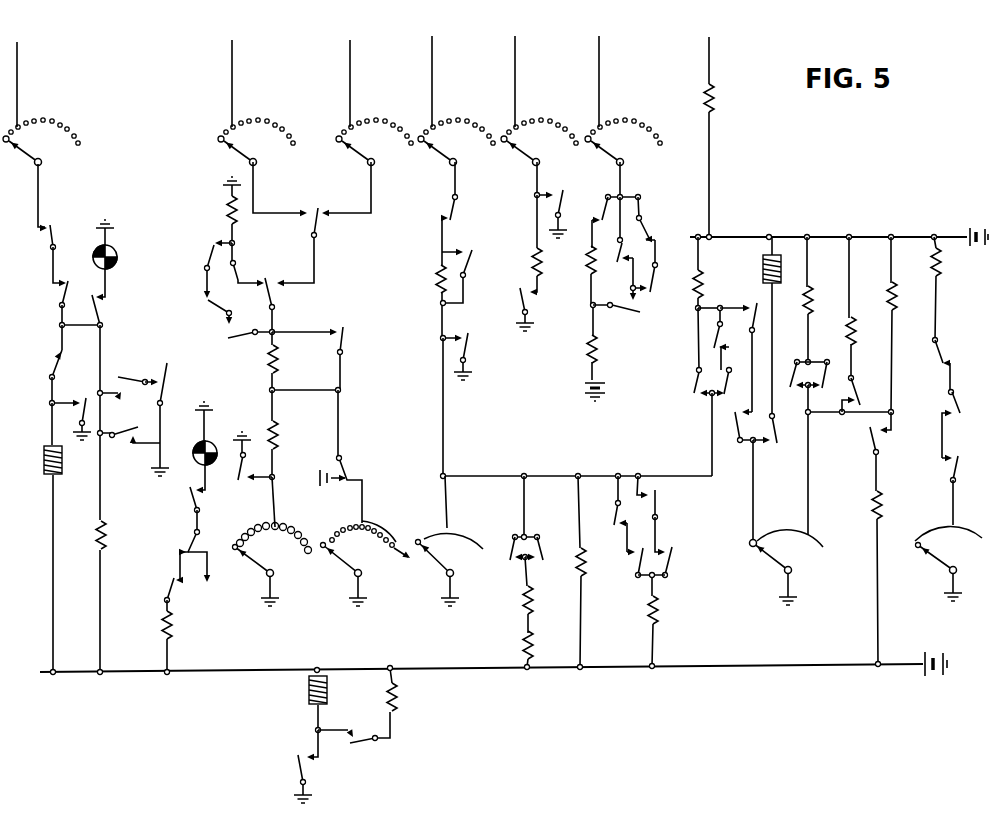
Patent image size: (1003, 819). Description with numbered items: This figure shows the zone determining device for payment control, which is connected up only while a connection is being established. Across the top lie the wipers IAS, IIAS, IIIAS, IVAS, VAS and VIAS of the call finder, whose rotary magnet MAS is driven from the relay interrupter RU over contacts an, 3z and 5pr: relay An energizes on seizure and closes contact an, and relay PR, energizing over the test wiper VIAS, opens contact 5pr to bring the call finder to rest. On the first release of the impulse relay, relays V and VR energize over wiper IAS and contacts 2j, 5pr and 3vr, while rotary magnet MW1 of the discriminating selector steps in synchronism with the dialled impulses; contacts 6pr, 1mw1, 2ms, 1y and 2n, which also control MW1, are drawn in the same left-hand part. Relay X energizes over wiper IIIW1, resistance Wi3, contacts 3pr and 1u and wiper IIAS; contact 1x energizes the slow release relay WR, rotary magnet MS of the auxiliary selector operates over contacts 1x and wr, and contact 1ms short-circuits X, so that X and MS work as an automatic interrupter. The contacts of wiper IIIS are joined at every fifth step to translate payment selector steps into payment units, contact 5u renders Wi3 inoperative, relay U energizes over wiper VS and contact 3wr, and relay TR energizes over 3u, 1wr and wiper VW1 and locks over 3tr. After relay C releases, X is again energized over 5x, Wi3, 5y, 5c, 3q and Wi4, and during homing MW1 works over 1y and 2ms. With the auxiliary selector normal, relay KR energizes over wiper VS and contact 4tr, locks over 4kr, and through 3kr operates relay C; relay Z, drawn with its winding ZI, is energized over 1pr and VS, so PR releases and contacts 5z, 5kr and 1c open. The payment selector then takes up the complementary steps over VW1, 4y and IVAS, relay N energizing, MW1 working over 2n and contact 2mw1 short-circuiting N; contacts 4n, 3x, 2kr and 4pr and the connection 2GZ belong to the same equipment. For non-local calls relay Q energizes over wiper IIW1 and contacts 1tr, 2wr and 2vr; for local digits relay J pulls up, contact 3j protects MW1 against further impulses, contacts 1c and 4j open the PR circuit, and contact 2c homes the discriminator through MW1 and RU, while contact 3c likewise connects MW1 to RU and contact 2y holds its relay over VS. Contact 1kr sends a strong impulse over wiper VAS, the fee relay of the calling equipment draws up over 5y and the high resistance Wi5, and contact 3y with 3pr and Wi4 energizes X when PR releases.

The selector switch I IAS is at (41, 104).
The selector switch II IIAS is at (256, 103).
The selector switch III IIIAS is at (374, 103).
The selector switch IV IVAS is at (456, 101).
The selector switch V VAS is at (539, 101).
The selector switch VI VIAS is at (623, 101).
The relay contact 2j is at (47, 207).
The relay contact 6pr is at (47, 277).
The relay contact 3vr is at (43, 352).
The relay contact 1mw1 is at (72, 408).
The relay VR is at (38, 539).
The signal lamp RU is at (160, 342).
The relay contact 3c is at (419, 332).
The relay MW1 is at (124, 533).
The relay contact 2ms is at (123, 380).
The relay contact 1y is at (159, 401).
The relay contact 2n is at (134, 443).
The relay contact an is at (204, 489).
The relay contact 3z is at (185, 532).
The connection 2GZ is at (205, 576).
The relay contact 5pr is at (161, 577).
The relay MAS is at (187, 637).
The relay contact 1u is at (312, 224).
The resistor Wi4 is at (219, 211).
The relay contact 3q is at (464, 305).
The relay contact 5c is at (206, 307).
The relay contact 5y is at (373, 308).
The relay contact 3y is at (248, 275).
The relay contact 3pr is at (270, 298).
The relay contact 1ms is at (312, 351).
The relay X is at (282, 362).
The resistor Wi3 is at (292, 435).
The relay contact 5x is at (252, 465).
The stepping switch wiper IIIW1 is at (272, 541).
The relay contact 5u is at (343, 456).
The stepping switch IIIS is at (374, 560).
The relay contact 4y is at (457, 207).
The relay contact 2mw1 is at (466, 268).
The relay N is at (428, 295).
The relay contact 4n is at (457, 349).
The stepping switch wiper VW1 is at (450, 541).
The relay contact 1kr is at (552, 200).
The resistor Wi5 is at (521, 235).
The relay contact 5z is at (592, 222).
The relay PR is at (584, 323).
The relay contact 4pr is at (616, 317).
The relay contact 5kr is at (626, 248).
The relay contact 1c is at (650, 231).
The relay contact 4j is at (650, 289).
The relay An is at (721, 138).
The relay KR is at (778, 452).
The relay contact 3x is at (738, 350).
The relay contact 4tr is at (735, 426).
The relay contact 1pr is at (769, 440).
The relay contact 4kr is at (693, 361).
The relay Z is at (832, 328).
The relay U is at (816, 301).
The relay contact 3u is at (713, 470).
The relay contact 3wr is at (850, 448).
The relay V is at (850, 309).
The relay contact 2y is at (860, 395).
The relay contact 2kr is at (886, 434).
The stepping switch VS is at (787, 522).
The relay Q is at (945, 290).
The relay contact 2vr is at (952, 367).
The relay contact 2wr is at (964, 425).
The relay contact 1tr is at (963, 464).
The stepping switch wiper IIW1 is at (947, 540).
The relay contact 2c is at (510, 558).
The relay contact 3kr is at (542, 558).
The relay J is at (526, 595).
The relay C is at (527, 650).
The relay ZI is at (587, 573).
The relay contact 1wr is at (609, 514).
The relay contact 3j is at (651, 498).
The relay contact 3tr is at (673, 547).
The relay TR is at (661, 621).
The relay WR is at (334, 700).
The relay contact wr is at (354, 736).
The relay MS is at (409, 689).
The relay contact 1x is at (303, 766).